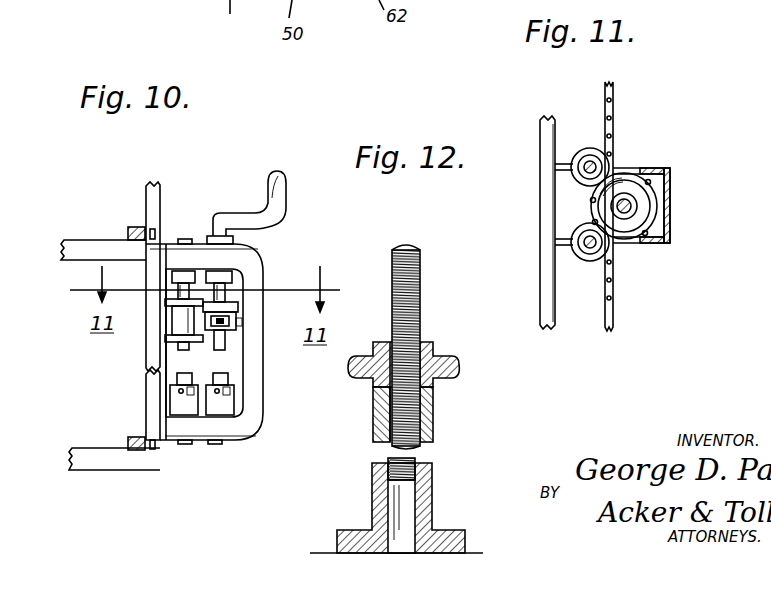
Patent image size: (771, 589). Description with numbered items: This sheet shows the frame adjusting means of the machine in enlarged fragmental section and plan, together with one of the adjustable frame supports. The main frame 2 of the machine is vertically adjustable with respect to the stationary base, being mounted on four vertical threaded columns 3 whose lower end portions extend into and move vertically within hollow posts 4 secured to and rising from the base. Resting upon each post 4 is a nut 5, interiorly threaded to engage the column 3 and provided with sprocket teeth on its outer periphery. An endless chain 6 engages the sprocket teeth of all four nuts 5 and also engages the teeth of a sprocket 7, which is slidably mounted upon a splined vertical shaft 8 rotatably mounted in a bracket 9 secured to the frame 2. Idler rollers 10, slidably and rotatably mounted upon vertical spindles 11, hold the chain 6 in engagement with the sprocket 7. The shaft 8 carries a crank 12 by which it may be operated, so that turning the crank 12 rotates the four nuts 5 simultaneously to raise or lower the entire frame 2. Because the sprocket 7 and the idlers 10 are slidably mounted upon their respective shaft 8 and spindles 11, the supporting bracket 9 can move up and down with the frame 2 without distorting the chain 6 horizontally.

In FIG. 10, the main frame 2 is at (152, 400).
In FIG. 11, the main frame 2 is at (541, 258).
In FIG. 12, the threaded column 3 is at (408, 302).
In FIG. 12, the hollow post 4 is at (433, 478).
In FIG. 12, the nut 5 is at (458, 368).
In FIG. 11, the endless chain 6 is at (615, 118).
In FIG. 10, the sprocket 7 is at (232, 320).
In FIG. 11, the sprocket 7 is at (636, 190).
In FIG. 10, the splined vertical shaft 8 is at (246, 348).
In FIG. 11, the splined vertical shaft 8 is at (631, 205).
In FIG. 10, the bracket 9 is at (236, 424).
In FIG. 11, the bracket 9 is at (670, 236).
In FIG. 10, the idler roller 10 is at (185, 320).
In FIG. 11, the idler roller 10 is at (580, 176).
In FIG. 10, the vertical spindle 11 is at (188, 377).
In FIG. 11, the vertical spindle 11 is at (590, 162).
In FIG. 10, the crank 12 is at (278, 190).